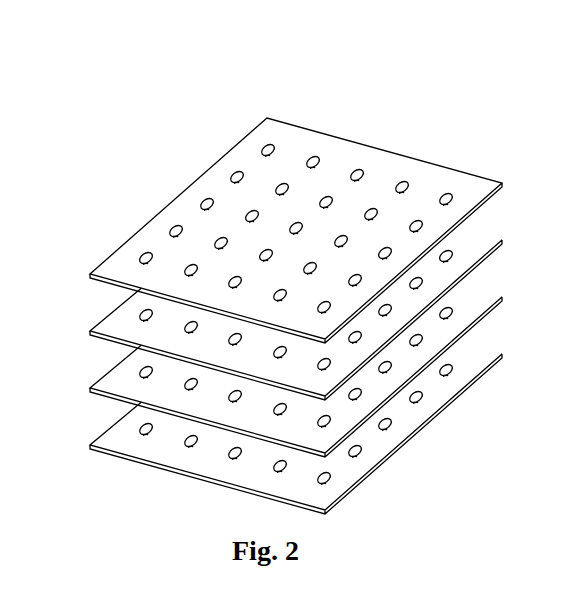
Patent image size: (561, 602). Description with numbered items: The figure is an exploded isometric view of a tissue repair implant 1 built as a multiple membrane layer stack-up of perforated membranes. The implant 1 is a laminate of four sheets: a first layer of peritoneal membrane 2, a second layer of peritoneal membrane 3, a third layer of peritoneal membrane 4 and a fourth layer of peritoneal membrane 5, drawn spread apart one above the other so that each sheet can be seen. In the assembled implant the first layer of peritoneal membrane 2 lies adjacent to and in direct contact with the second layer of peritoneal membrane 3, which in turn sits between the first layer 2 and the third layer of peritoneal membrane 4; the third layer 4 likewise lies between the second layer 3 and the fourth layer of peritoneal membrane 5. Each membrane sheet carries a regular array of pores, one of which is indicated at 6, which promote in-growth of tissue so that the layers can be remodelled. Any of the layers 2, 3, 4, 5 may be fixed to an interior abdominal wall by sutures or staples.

The tissue repair implant 1 is at (267, 259).
The first layer of peritoneal membrane 2 is at (296, 199).
The second layer of peritoneal membrane 3 is at (98, 332).
The third layer of peritoneal membrane 4 is at (98, 388).
The fourth layer of peritoneal membrane 5 is at (98, 445).
The perforation hole 6 is at (442, 193).